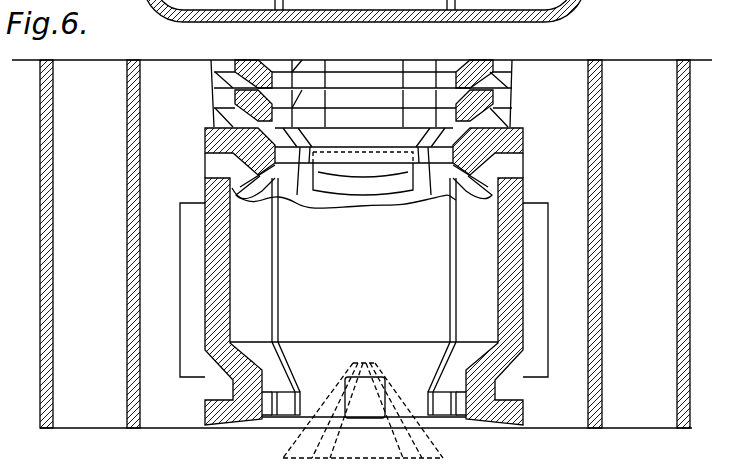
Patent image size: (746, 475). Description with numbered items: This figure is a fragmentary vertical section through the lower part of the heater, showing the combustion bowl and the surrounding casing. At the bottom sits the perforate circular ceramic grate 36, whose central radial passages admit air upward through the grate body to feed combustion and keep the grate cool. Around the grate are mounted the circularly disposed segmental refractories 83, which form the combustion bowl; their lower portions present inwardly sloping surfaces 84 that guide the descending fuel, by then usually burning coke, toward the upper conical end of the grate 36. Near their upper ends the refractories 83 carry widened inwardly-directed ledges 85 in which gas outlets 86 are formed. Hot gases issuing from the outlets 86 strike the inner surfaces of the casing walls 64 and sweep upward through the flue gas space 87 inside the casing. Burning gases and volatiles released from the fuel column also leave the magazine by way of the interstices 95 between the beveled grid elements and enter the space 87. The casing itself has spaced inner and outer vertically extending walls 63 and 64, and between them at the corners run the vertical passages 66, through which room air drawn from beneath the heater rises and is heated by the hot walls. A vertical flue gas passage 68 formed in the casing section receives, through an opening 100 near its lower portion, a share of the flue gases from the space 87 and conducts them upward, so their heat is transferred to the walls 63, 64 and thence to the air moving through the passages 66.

The ceramic grate 36 is at (443, 452).
The inner wall 63 is at (705, 136).
The outer wall 64 is at (588, 120).
The vertical passage 66 is at (366, 390).
The vertical flue gas passage 68 is at (364, 23).
The segmental refractory 83 is at (510, 227).
The inwardly sloping surface 84 is at (500, 362).
The inwardly-directed ledge 85 is at (487, 145).
The gas outlet 86 is at (545, 172).
The flue gas space 87 is at (338, 160).
The interstice 95 is at (445, 88).
The opening 100 is at (620, 276).